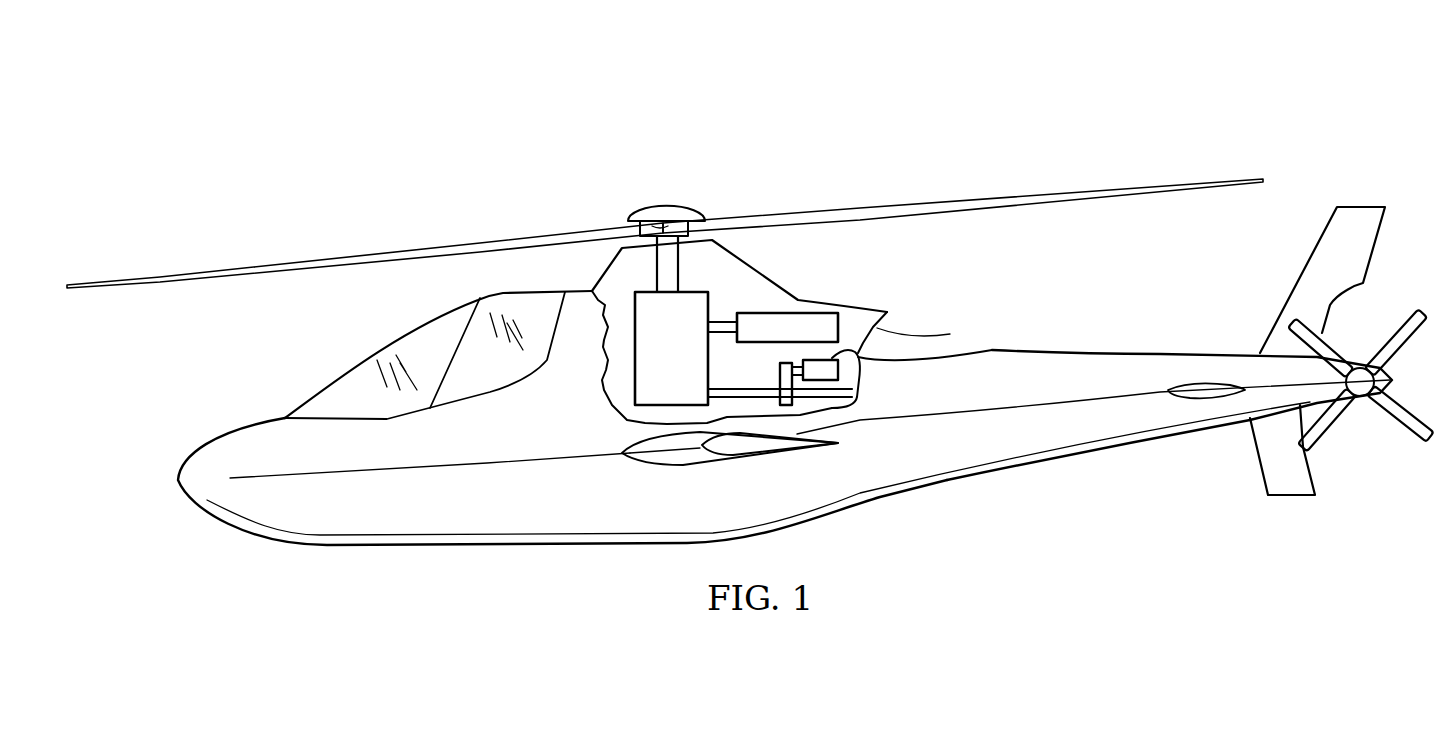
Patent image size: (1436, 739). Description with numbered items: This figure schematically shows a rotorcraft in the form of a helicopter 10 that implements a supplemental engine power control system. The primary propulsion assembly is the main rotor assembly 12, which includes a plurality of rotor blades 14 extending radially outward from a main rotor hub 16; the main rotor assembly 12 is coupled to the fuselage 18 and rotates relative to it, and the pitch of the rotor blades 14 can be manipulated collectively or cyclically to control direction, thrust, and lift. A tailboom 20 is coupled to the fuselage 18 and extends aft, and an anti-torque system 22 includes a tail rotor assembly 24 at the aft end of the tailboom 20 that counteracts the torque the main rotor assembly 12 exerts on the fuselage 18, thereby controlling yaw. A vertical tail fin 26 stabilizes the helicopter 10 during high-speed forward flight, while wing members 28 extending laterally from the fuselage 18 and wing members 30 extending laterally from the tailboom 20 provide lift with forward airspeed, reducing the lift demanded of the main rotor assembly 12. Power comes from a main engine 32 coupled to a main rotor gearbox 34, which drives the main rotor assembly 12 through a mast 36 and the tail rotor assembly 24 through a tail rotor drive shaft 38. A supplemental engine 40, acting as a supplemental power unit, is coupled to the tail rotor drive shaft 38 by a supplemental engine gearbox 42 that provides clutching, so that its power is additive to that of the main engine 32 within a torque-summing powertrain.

The helicopter 10 is at (1027, 99).
The main rotor assembly 12 is at (870, 208).
The rotor blades 14 is at (442, 247).
The main rotor hub 16 is at (660, 205).
The fuselage 18 is at (497, 520).
The tailboom 20 is at (1032, 437).
The anti-torque system 22 is at (1397, 318).
The tail rotor assembly 24 is at (1403, 427).
The vertical tail fin 26 is at (1363, 207).
The wing members 28 is at (693, 467).
The wing members 30 is at (1197, 380).
The main engine 32 is at (822, 313).
The main rotor gearbox 34 is at (656, 363).
The mast 36 is at (657, 280).
The tail rotor drive shaft 38 is at (832, 405).
The supplemental engine 40 is at (863, 360).
The supplemental engine gearbox 42 is at (777, 377).